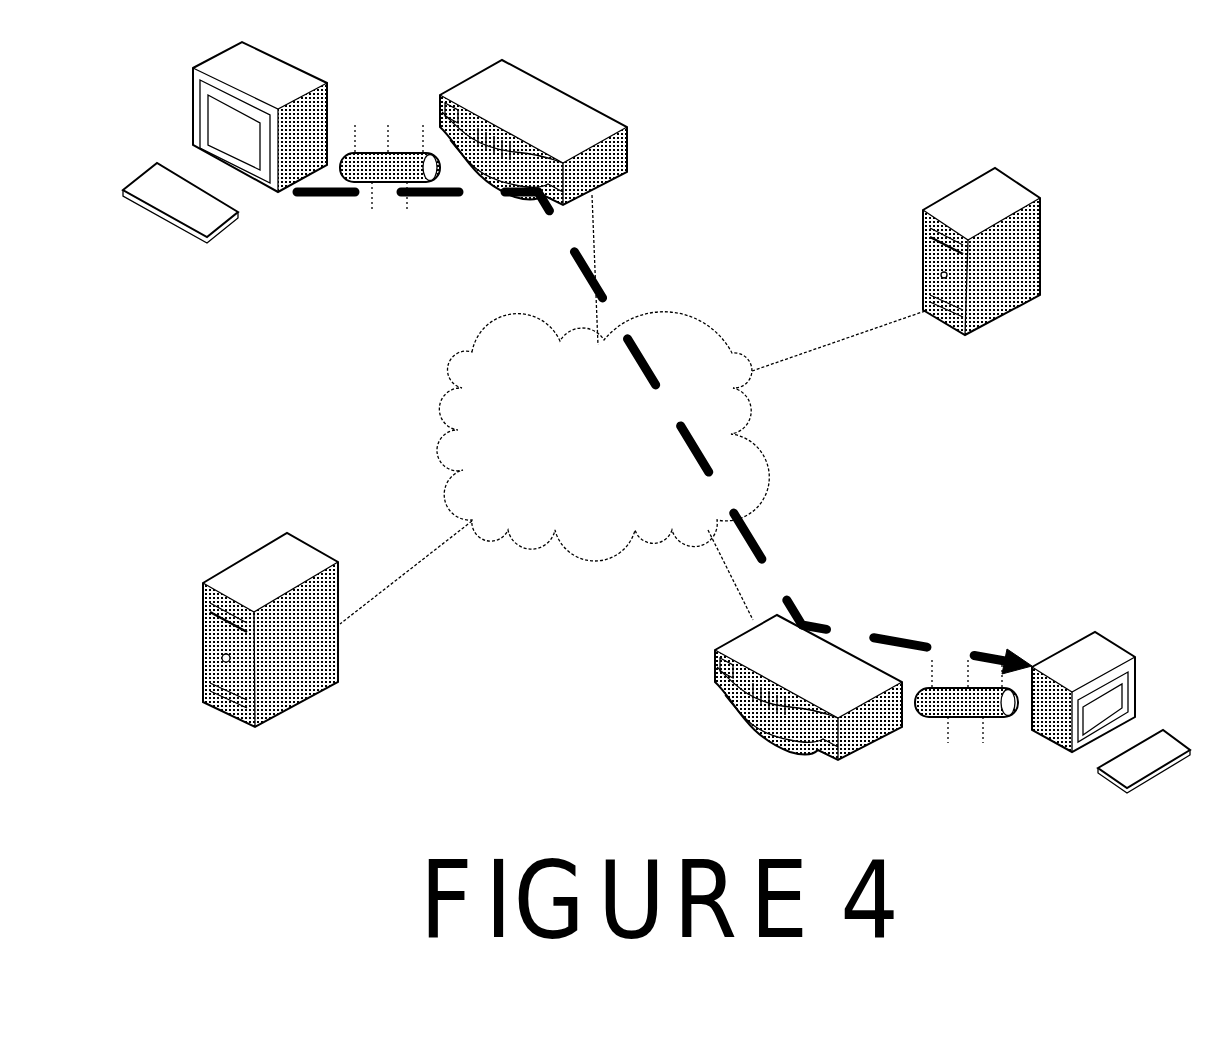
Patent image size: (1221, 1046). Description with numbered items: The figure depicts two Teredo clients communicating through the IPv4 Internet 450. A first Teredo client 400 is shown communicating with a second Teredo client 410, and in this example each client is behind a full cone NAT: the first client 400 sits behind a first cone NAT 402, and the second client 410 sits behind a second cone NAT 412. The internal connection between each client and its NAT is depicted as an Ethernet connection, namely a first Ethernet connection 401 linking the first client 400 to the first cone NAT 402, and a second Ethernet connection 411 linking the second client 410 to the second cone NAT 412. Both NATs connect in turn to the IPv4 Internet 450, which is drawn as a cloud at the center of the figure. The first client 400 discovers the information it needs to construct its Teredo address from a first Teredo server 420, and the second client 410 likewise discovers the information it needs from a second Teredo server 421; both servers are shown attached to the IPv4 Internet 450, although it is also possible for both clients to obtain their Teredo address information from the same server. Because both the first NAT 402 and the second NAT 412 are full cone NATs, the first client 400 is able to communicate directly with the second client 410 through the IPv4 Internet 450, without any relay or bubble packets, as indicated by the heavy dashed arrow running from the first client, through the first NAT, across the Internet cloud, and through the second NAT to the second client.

The first Teredo client 400 is at (222, 237).
The first Ethernet connection 401 is at (430, 187).
The first cone NAT 402 is at (600, 112).
The second Teredo client 410 is at (1095, 632).
The second Ethernet connection 411 is at (1023, 717).
The second cone NAT 412 is at (813, 750).
The first Teredo server 420 is at (960, 187).
The second Teredo server 421 is at (202, 585).
The IPv4 Internet 450 is at (735, 440).